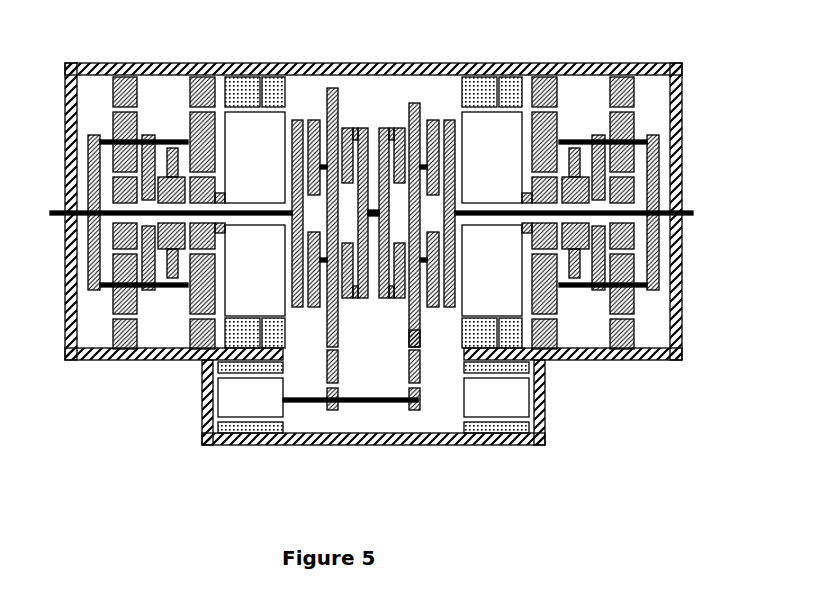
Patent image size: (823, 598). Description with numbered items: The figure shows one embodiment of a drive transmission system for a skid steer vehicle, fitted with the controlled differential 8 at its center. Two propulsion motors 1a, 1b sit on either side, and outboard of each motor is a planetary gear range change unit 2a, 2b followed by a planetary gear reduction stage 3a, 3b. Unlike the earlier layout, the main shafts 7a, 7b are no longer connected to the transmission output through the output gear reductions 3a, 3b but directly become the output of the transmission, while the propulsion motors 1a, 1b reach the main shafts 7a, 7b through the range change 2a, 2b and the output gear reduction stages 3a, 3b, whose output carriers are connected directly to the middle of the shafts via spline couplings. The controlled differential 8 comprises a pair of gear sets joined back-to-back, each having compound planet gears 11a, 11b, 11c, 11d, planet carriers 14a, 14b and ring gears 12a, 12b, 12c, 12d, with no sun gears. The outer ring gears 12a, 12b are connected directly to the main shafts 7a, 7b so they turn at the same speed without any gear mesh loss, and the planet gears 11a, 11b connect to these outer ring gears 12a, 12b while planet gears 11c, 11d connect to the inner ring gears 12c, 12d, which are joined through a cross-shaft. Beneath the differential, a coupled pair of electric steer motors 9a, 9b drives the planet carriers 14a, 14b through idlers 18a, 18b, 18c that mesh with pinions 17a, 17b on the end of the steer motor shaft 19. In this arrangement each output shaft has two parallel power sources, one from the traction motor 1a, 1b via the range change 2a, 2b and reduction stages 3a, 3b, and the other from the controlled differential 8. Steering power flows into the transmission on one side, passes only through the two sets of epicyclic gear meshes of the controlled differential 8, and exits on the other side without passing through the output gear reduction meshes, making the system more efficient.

The propulsion motor 1a is at (257, 133).
The propulsion motor 1b is at (488, 143).
The planetary gear range change unit 2a is at (200, 154).
The planetary gear range change unit 2b is at (552, 153).
The planetary gear reduction stage 3a is at (123, 178).
The planetary gear reduction stage 3b is at (627, 188).
The main shaft 7a is at (230, 213).
The main shaft 7b is at (502, 215).
The controlled differential 8 is at (375, 90).
The steer motor 9a is at (242, 398).
The steer motor 9b is at (497, 403).
The compound planet gear 11a is at (315, 257).
The compound planet gear 11b is at (448, 245).
The compound planet gear 11c is at (345, 262).
The compound planet gear 11d is at (398, 258).
The ring gear 12a is at (297, 242).
The ring gear 12b is at (432, 258).
The inner ring gear 12c is at (362, 157).
The inner ring gear 12d is at (382, 157).
The planet carrier 14a is at (330, 112).
The planet carrier 14b is at (413, 122).
The pinion 17a is at (330, 400).
The pinion 17b is at (413, 400).
The idler 18a is at (330, 367).
The idler 18b is at (413, 370).
The idler 18c is at (415, 340).
The steer motor shaft 19 is at (368, 400).